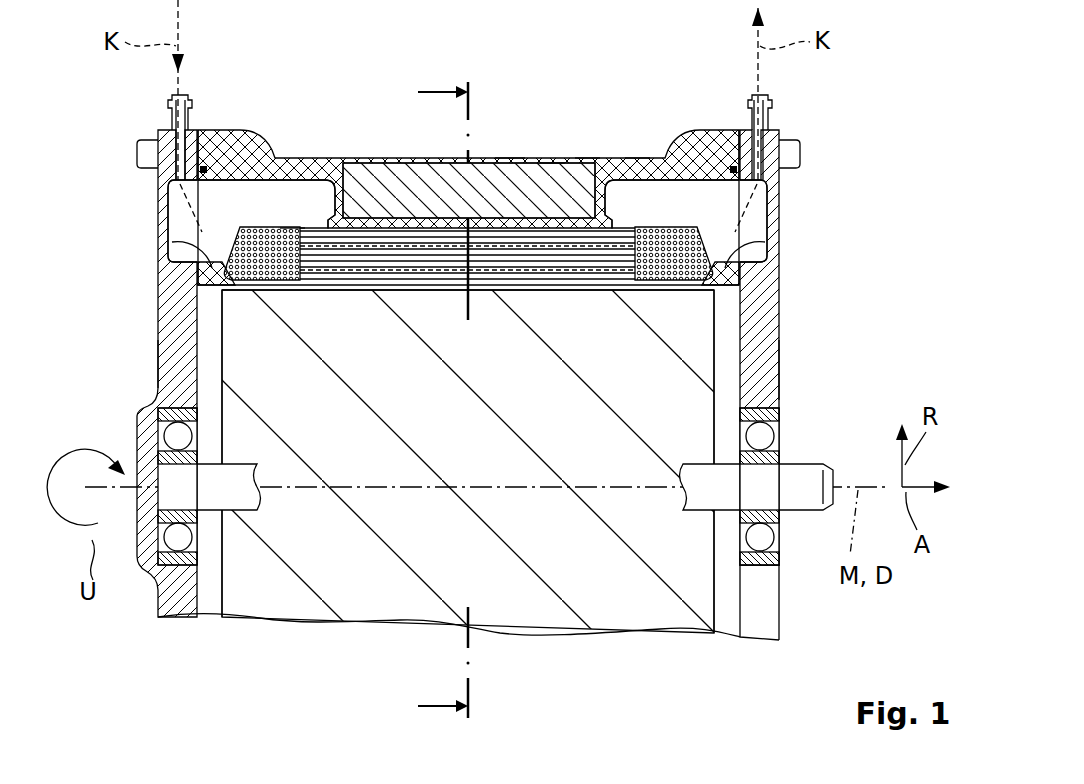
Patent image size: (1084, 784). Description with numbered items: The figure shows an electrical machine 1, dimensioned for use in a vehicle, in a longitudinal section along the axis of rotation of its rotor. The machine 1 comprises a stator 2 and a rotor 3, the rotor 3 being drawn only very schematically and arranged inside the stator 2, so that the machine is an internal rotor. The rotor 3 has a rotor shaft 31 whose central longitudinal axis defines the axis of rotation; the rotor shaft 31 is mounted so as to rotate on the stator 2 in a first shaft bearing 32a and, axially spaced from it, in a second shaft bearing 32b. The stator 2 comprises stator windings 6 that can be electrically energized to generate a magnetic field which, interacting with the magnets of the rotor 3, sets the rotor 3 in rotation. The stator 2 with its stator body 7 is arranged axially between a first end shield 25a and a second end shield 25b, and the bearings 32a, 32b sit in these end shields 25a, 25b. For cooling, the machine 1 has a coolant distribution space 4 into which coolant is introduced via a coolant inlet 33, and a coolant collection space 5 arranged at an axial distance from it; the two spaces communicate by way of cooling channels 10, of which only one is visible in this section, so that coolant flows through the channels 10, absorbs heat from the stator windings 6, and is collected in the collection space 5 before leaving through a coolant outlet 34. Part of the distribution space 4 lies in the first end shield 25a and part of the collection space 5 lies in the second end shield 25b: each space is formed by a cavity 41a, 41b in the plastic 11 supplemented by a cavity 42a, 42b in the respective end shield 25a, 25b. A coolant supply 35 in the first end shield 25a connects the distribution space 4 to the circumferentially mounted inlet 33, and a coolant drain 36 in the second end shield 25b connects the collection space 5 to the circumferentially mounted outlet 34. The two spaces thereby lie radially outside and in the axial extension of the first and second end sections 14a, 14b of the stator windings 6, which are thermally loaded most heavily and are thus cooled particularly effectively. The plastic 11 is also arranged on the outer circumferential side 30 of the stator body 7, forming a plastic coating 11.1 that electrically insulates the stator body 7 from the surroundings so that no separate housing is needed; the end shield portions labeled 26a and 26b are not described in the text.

The electrical machine 1 is at (897, 120).
The stator 2 is at (588, 148).
The rotor 3 is at (447, 448).
The coolant distribution space 4 is at (218, 213).
The coolant collection space 5 is at (701, 213).
The stator windings 6 is at (293, 214).
The stator body 7 is at (508, 148).
The cooling channels 10 is at (350, 286).
The plastic 11 is at (637, 148).
The plastic coating 11.1 is at (548, 158).
The first end section 14a is at (203, 245).
The second end section 14b is at (734, 240).
The first end shield 25a is at (148, 311).
The second end shield 25b is at (790, 311).
The first housing wall 26a is at (158, 377).
The second housing wall 26b is at (779, 372).
The outer circumferential side 30 is at (378, 160).
The rotor shaft 31 is at (803, 496).
The first shaft bearing 32a is at (160, 421).
The second shaft bearing 32b is at (776, 420).
The coolant inlet 33 is at (168, 103).
The coolant outlet 34 is at (773, 103).
The coolant supply 35 is at (176, 152).
The coolant drain 36 is at (782, 155).
The first cavity 41a is at (270, 200).
The second cavity 41b is at (688, 192).
The cavity 42a is at (182, 210).
The cavity 42b is at (756, 213).